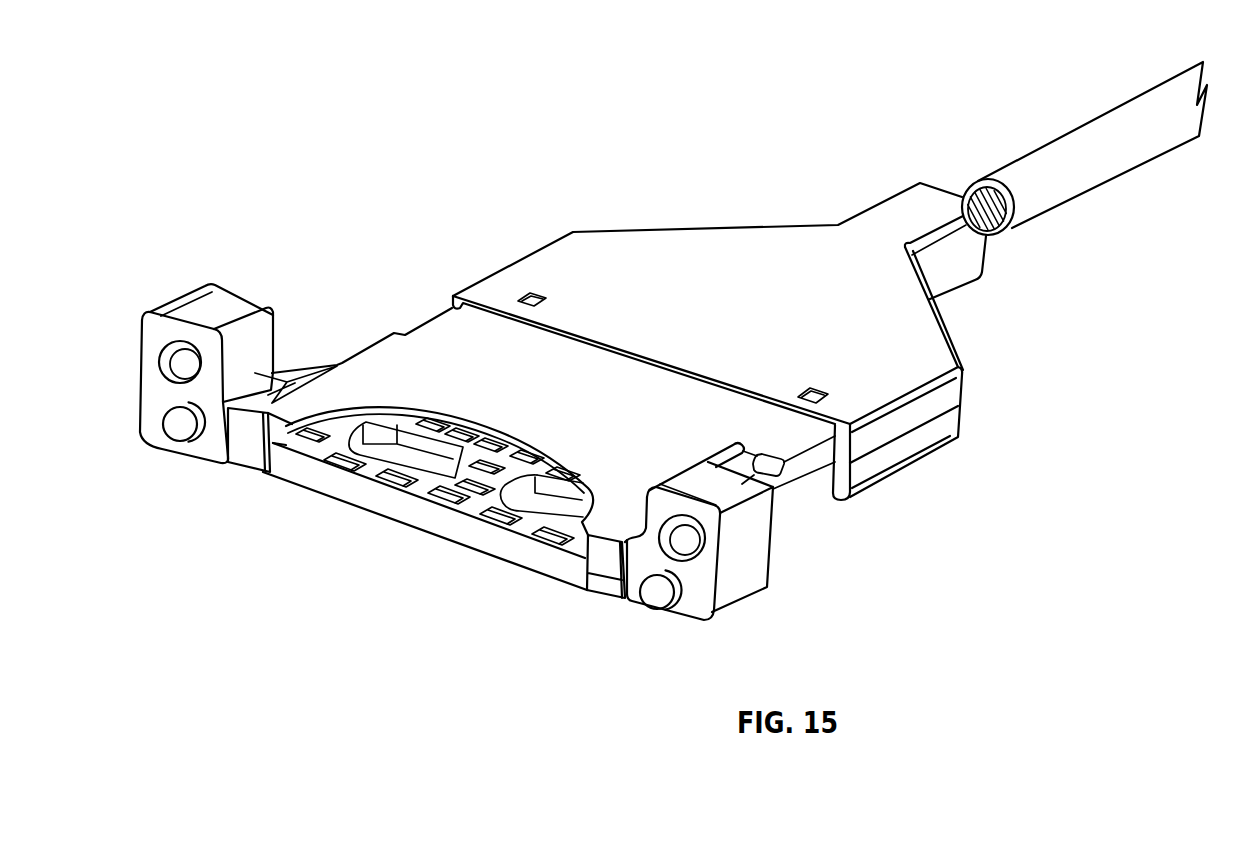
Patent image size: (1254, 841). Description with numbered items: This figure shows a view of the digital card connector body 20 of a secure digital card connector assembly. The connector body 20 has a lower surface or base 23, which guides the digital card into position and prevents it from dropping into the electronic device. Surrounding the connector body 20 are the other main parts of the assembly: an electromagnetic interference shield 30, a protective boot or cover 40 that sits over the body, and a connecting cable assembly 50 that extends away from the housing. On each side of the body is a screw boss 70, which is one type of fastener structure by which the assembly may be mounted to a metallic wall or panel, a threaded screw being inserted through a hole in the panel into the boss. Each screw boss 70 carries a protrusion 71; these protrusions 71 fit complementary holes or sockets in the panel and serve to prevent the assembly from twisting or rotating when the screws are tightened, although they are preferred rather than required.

The digital card connector body 20 is at (673, 391).
The lower surface or base 23 is at (437, 522).
The electromagnetic interference (EMI) shield 30 is at (617, 420).
The protective boot or cover 40 is at (713, 306).
The connecting cable assembly 50 is at (1168, 138).
The screw boss 70 is at (756, 563).
The protrusion 71 is at (613, 637).